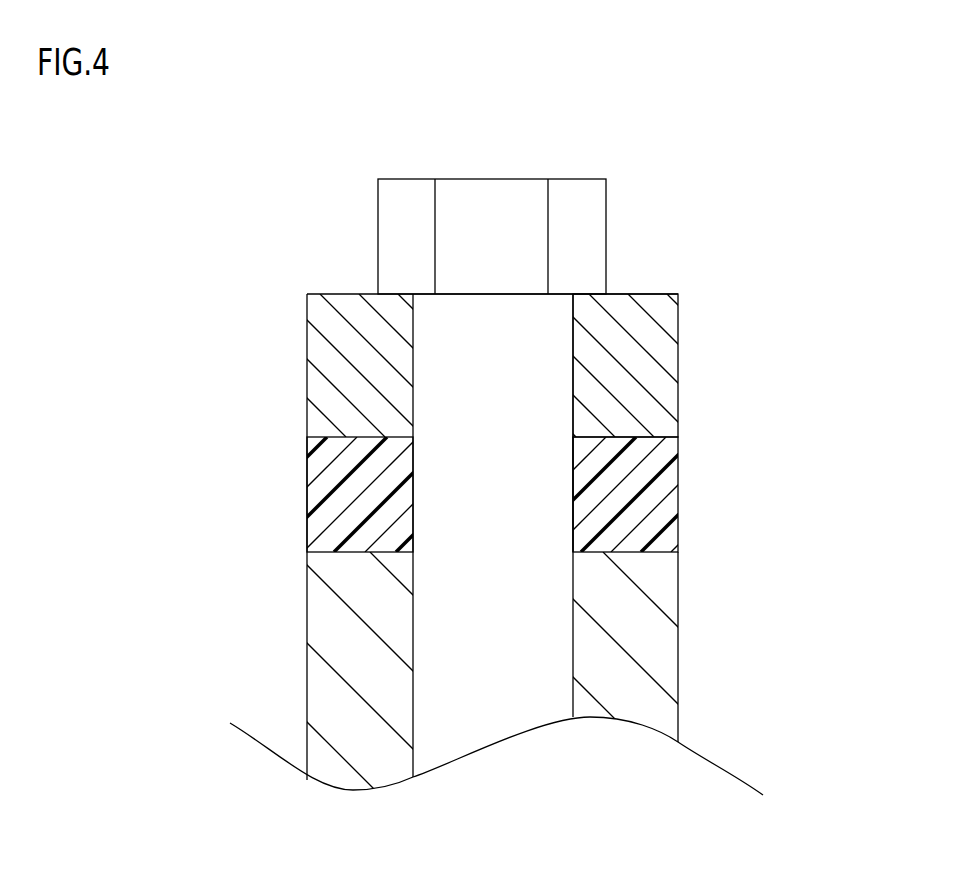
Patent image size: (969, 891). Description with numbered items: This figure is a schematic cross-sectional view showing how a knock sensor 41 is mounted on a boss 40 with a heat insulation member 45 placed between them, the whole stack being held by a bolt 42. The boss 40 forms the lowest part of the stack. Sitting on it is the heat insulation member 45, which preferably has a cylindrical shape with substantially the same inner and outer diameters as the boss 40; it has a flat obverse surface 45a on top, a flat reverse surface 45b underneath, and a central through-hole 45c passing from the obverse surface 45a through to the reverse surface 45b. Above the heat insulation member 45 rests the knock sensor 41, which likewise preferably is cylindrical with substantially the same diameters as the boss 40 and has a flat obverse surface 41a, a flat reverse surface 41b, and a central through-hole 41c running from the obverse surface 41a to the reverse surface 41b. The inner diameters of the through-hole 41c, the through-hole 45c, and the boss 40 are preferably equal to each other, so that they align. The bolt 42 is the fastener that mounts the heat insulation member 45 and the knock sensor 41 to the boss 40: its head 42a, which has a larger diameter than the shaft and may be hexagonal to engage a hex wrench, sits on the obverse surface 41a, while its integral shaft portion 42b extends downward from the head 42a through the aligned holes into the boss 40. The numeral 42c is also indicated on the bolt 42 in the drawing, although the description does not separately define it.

The boss 40 is at (682, 685).
The knock sensor 41 is at (682, 368).
The obverse surface 41a is at (593, 294).
The reverse surface 41b is at (645, 437).
The through-hole 41c is at (572, 370).
The bolt 42 is at (145, 435).
The head 42a is at (378, 260).
The shaft portion 42b is at (440, 619).
The terminal end face 42c is at (573, 294).
The heat insulation member 45 is at (682, 523).
The obverse surface 45a is at (670, 433).
The reverse surface 45b is at (632, 553).
The through-hole 45c is at (573, 533).